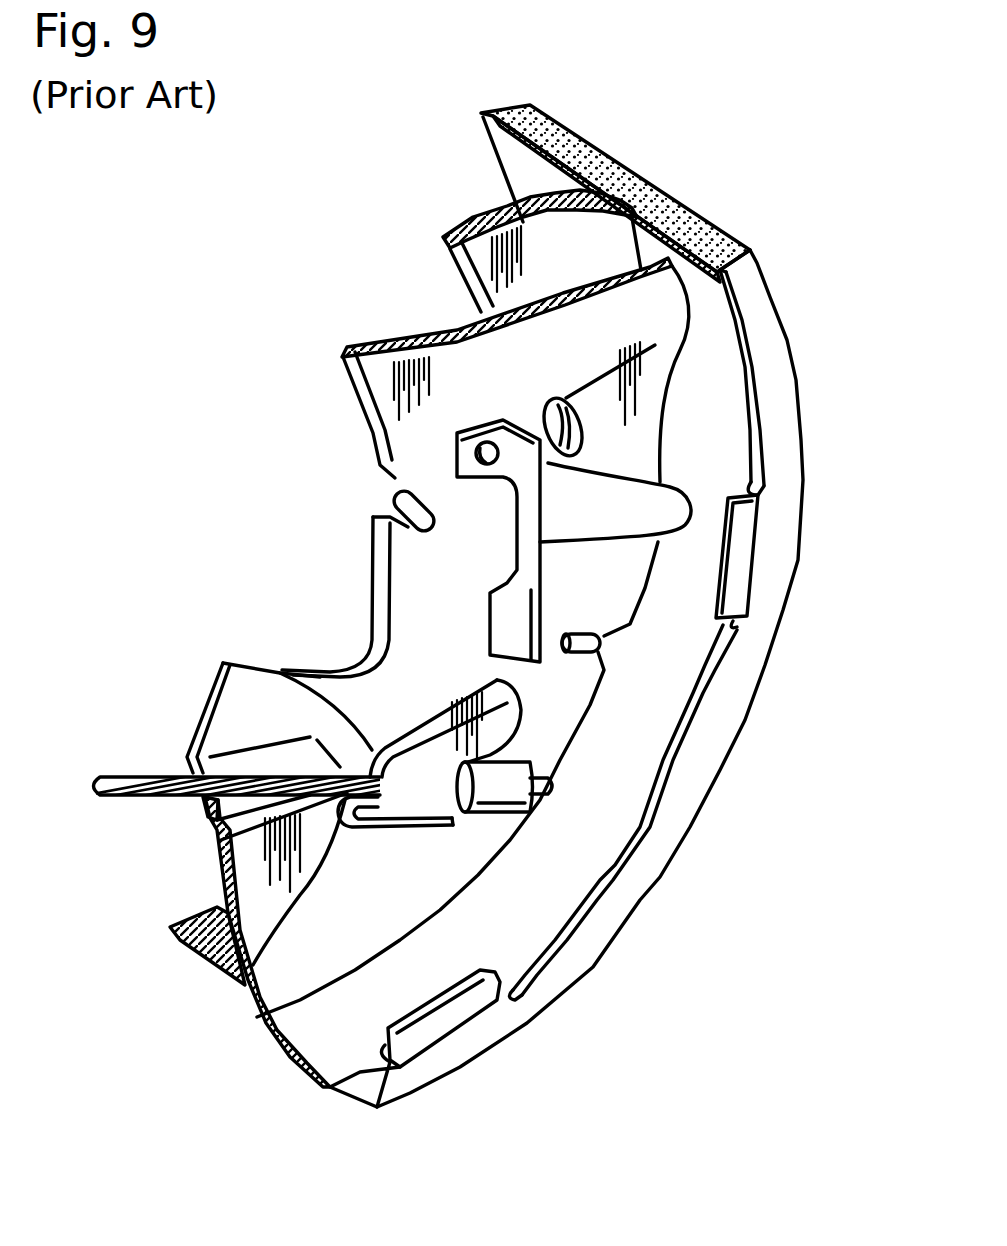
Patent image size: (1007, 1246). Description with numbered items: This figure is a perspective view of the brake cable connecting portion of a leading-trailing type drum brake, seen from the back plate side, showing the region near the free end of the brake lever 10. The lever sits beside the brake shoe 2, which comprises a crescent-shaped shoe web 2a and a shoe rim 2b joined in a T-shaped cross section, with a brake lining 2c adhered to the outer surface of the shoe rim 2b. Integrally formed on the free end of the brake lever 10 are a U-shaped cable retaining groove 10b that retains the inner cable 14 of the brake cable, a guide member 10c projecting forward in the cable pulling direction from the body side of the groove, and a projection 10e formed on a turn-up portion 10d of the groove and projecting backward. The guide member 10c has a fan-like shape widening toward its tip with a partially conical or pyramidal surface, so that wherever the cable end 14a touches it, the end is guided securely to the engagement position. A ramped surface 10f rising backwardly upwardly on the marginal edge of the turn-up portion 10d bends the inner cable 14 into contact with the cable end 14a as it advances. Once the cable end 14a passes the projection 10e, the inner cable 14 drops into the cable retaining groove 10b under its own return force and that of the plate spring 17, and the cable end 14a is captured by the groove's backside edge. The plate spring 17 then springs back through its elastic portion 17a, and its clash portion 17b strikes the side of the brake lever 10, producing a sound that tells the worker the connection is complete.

The brake shoe 2 is at (790, 347).
The shoe web 2a is at (453, 228).
The shoe rim 2b is at (500, 152).
The brake lining 2c is at (527, 107).
The brake lever 10 is at (360, 350).
The cable retaining groove 10b is at (228, 992).
The guide member 10c is at (227, 697).
The turn-up portion 10d is at (282, 672).
The projection 10e is at (507, 707).
The ramped surface 10f is at (375, 740).
The inner cable 14 is at (172, 798).
The cable end 14a is at (507, 805).
The plate spring 17 is at (493, 405).
The elastic portion 17a is at (520, 510).
The clash portion 17b is at (500, 614).